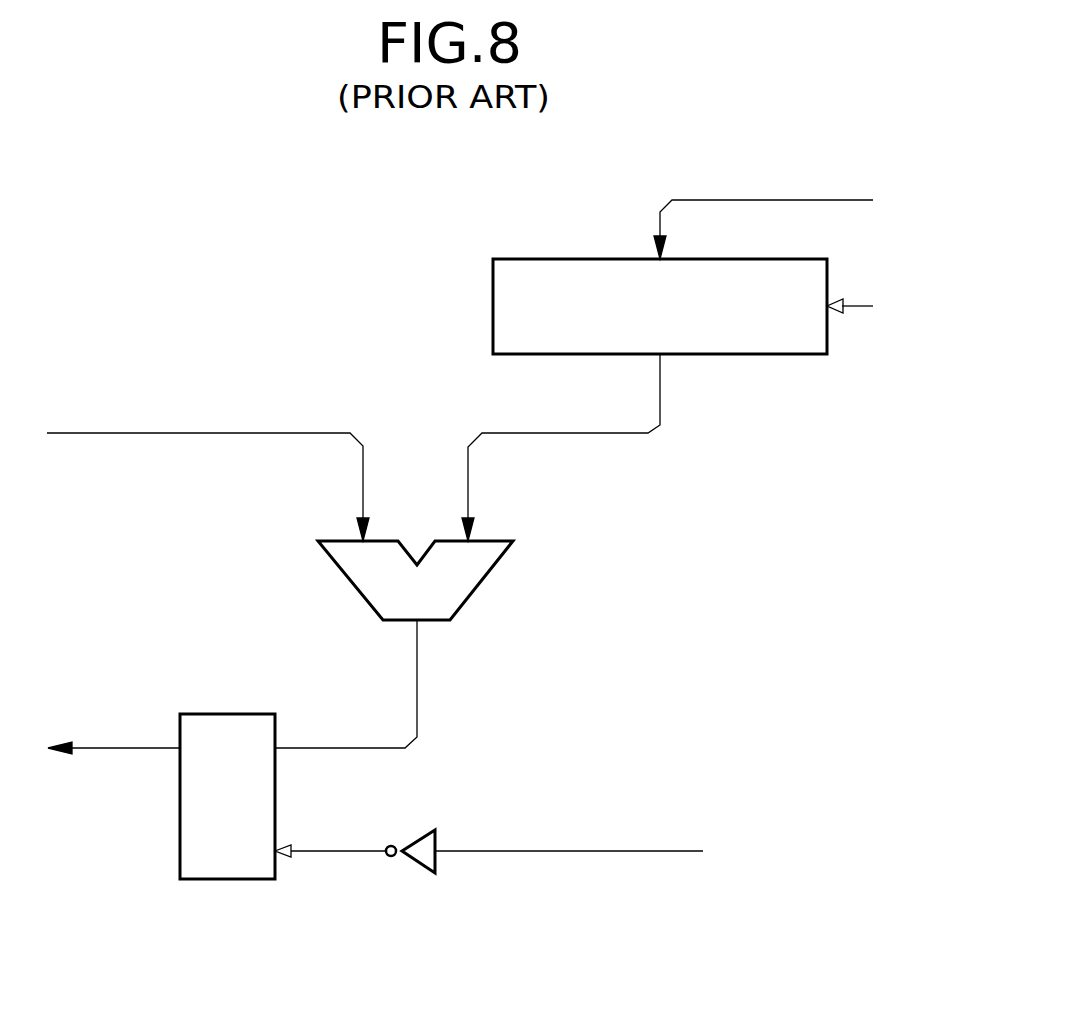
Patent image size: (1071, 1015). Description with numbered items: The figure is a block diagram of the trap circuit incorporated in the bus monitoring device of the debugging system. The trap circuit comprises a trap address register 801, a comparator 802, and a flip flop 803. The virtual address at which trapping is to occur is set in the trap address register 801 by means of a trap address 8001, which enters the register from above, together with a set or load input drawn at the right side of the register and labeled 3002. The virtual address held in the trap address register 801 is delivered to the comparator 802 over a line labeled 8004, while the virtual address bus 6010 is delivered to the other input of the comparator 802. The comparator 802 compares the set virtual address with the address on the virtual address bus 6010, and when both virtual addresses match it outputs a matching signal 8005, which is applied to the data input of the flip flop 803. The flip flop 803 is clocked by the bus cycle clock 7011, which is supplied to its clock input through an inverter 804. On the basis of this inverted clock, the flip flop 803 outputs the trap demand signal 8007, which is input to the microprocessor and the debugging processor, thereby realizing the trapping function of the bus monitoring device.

The trap address register 801 is at (557, 258).
The trap address 8001 is at (821, 178).
The register load signal 3002 is at (880, 285).
The virtual address bus 6010 is at (158, 432).
The trap address output line 8004 is at (547, 432).
The comparator 802 is at (485, 580).
The matching signal 8005 is at (418, 690).
The flip flop 803 is at (232, 712).
The trap demand signal 8007 is at (95, 747).
The inverter 804 is at (423, 830).
The bus cycle clock 7011 is at (637, 832).